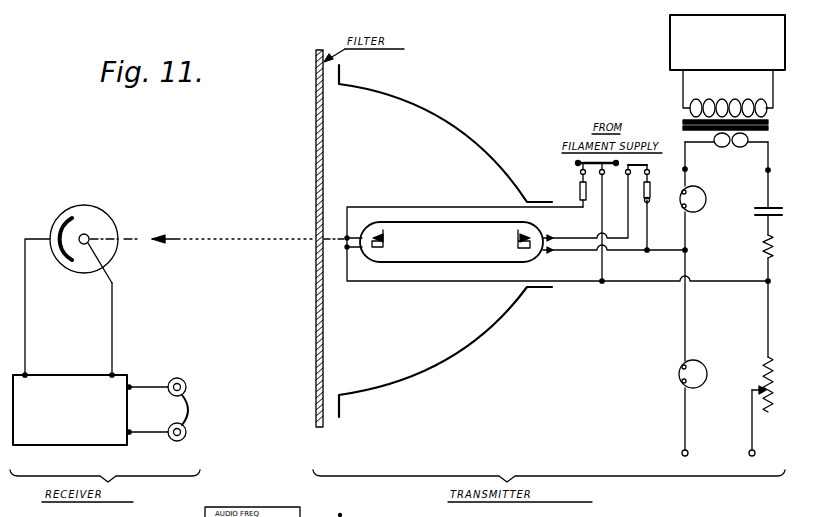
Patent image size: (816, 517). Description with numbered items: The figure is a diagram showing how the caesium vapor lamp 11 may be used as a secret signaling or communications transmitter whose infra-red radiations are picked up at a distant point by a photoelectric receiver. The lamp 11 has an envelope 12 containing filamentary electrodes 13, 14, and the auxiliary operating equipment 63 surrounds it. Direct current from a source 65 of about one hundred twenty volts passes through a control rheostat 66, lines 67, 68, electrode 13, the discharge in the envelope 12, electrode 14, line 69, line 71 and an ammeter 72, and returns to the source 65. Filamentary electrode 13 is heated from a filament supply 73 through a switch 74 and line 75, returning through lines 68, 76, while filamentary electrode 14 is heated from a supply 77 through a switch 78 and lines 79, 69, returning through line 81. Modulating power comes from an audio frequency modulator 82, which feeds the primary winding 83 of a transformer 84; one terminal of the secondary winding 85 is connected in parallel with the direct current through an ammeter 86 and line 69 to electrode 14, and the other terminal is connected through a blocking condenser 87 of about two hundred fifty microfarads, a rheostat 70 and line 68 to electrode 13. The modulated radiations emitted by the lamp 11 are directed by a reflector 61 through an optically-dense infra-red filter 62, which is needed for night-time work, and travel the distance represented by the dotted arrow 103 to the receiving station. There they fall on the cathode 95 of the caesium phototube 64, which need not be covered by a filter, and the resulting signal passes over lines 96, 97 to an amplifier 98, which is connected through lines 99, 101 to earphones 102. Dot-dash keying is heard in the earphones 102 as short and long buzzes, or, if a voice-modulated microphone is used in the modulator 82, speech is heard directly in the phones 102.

The lamp 11 is at (410, 262).
The envelope 12 is at (462, 263).
The filamentary electrode 13 is at (383, 230).
The filamentary electrode 14 is at (515, 232).
The reflector 61 is at (474, 134).
The infra-red filter 62 is at (315, 330).
The auxiliary operating equipment 63 is at (708, 124).
The caesium phototube receiver 64 is at (148, 191).
The source of direct current 65 is at (749, 452).
The control rheostat 66 is at (768, 365).
The line 67 is at (768, 318).
The line 68 is at (630, 283).
The line 69 is at (637, 252).
The rheostat 70 is at (772, 250).
The line 71 is at (685, 338).
The ammeter 72 is at (680, 377).
The filament supply 73 is at (578, 163).
The switch 74 is at (580, 192).
The line 75 is at (436, 206).
The line 76 is at (602, 218).
The filament supply 77 is at (647, 165).
The switch 78 is at (650, 196).
The line 79 is at (648, 232).
The line 81 is at (628, 218).
The audio frequency modulator 82 is at (668, 38).
The primary winding 83 is at (726, 100).
The transformer 84 is at (739, 121).
The secondary winding 85 is at (722, 150).
The ammeter 86 is at (702, 210).
The blocking condenser 87 is at (765, 208).
The cathode 95 is at (70, 215).
The line 96 is at (25, 326).
The line 97 is at (112, 315).
The amplifier 98 is at (68, 375).
The line 99 is at (147, 386).
The line 101 is at (146, 433).
The earphones 102 is at (192, 411).
The dotted arrow 103 is at (193, 236).